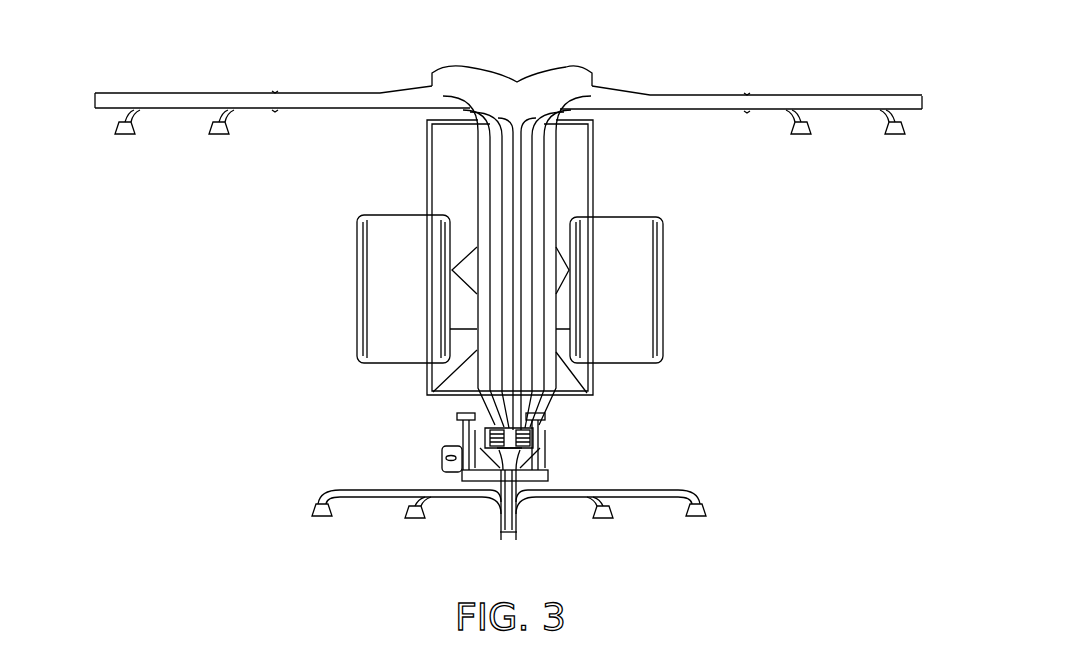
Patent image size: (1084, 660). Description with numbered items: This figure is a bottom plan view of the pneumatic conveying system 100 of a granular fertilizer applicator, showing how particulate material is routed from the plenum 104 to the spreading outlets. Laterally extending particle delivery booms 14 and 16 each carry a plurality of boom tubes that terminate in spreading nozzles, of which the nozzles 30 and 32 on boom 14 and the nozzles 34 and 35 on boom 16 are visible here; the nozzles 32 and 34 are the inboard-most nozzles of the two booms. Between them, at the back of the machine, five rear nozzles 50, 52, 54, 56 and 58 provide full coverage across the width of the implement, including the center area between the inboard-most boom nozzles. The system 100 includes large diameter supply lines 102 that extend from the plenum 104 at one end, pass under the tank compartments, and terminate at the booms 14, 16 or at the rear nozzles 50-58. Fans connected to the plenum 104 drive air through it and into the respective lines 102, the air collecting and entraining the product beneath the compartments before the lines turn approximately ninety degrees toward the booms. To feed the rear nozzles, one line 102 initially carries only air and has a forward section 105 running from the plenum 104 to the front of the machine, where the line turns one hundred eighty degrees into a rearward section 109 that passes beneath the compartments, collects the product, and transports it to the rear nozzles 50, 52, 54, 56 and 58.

The particle delivery boom 14 is at (398, 91).
The particle delivery boom 16 is at (710, 92).
The nozzle 30 is at (897, 138).
The nozzle 32 is at (803, 138).
The nozzle 34 is at (218, 138).
The nozzle 35 is at (124, 138).
The rear nozzle 50 is at (696, 520).
The rear nozzle 52 is at (603, 522).
The rear nozzle 54 is at (503, 524).
The rear nozzle 56 is at (414, 522).
The rear nozzle 58 is at (320, 520).
The pneumatic conveying system 100 is at (418, 399).
The supply line 102 is at (498, 213).
The plenum 104 is at (540, 463).
The forward section 105 is at (548, 300).
The rearward section 109 is at (512, 400).